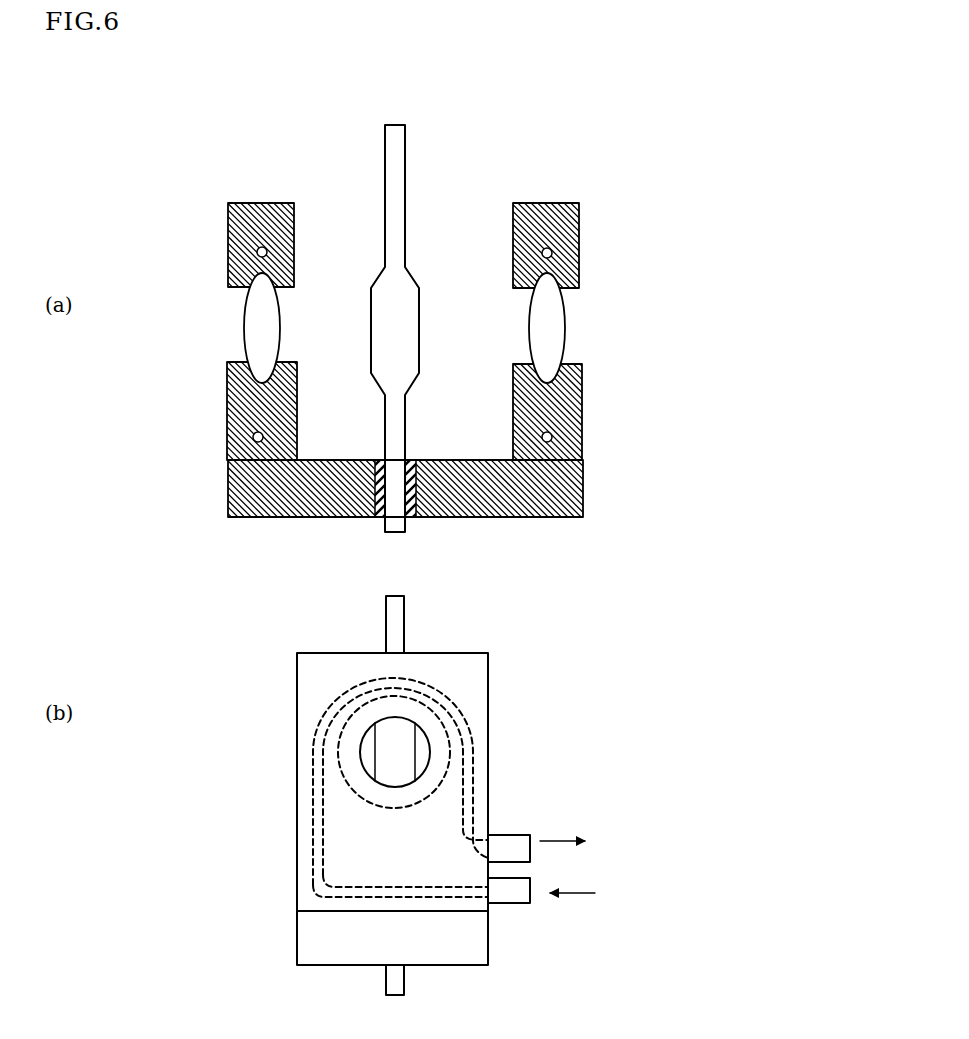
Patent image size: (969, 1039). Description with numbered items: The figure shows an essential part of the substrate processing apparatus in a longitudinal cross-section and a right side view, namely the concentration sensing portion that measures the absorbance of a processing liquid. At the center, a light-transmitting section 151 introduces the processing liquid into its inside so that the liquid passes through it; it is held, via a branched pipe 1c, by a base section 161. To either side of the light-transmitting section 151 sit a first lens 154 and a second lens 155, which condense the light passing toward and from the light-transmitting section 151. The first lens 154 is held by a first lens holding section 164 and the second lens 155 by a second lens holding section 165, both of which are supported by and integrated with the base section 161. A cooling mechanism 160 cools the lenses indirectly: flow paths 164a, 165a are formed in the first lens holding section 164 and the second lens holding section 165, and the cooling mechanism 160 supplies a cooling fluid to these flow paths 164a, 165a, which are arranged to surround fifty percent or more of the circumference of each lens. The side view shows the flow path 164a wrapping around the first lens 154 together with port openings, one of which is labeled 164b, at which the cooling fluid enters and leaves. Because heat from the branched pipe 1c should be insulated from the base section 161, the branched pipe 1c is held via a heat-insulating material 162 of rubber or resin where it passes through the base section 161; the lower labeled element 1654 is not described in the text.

In FIG. 6A, the branched pipe 1c is at (405, 180).
In FIG. 6B, the branched pipe 1c is at (385, 987).
In FIG. 6A, the light-transmitting section 151 is at (370, 261).
In FIG. 6B, the light-transmitting section 151 is at (415, 768).
In FIG. 6A, the first lens 154 is at (565, 336).
In FIG. 6B, the first lens 154 is at (340, 800).
In FIG. 6A, the second lens 155 is at (244, 343).
In FIG. 6B, the cooling mechanism 160 is at (550, 812).
In FIG. 6A, the base section 161 is at (583, 490).
In FIG. 6B, the base section 161 is at (303, 947).
In FIG. 6A, the heat-insulating material 162 is at (418, 517).
In FIG. 6A, the first lens holding section 164 is at (579, 263).
In FIG. 6B, the first lens holding section 164 is at (488, 677).
In FIG. 6A, the flow path 164a is at (552, 251).
In FIG. 6B, the flow path 164a is at (488, 706).
In FIG. 6B, the inlet port 164b is at (517, 915).
In FIG. 6A, the second lens holding section 165 is at (262, 331).
In FIG. 6A, the flow path 165a is at (257, 252).
In FIG. 6A, the holding block 1654 is at (228, 269).